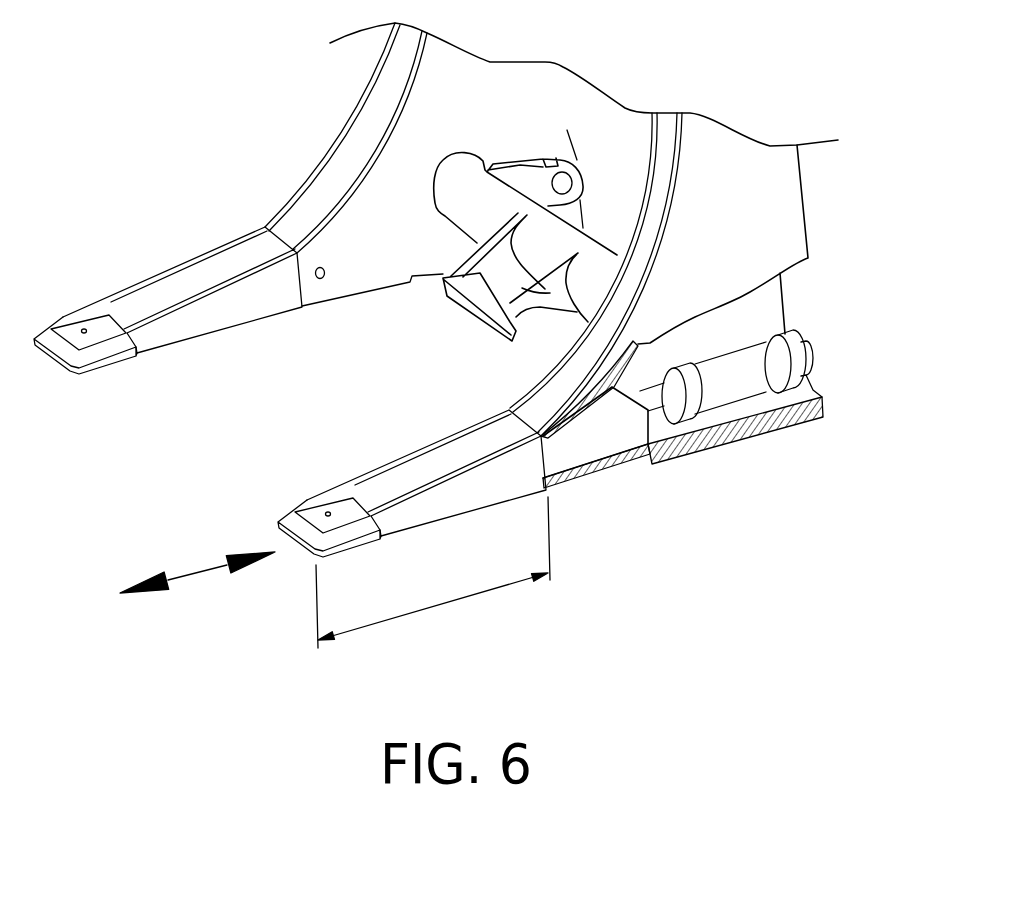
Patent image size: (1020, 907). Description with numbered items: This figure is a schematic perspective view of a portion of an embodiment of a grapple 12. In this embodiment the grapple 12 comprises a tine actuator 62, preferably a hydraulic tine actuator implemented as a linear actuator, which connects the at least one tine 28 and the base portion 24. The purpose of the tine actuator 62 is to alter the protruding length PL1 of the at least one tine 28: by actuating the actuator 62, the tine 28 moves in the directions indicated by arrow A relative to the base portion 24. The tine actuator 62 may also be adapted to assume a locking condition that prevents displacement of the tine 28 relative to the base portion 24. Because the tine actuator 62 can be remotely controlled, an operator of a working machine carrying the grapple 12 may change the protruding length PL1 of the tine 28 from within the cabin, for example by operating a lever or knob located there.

The grapple 12 is at (241, 147).
The base portion 24 is at (833, 320).
The tine 28 is at (284, 454).
The tine actuator 62 is at (778, 447).
The arrow A is at (213, 571).
The protruding length PL1 is at (433, 576).